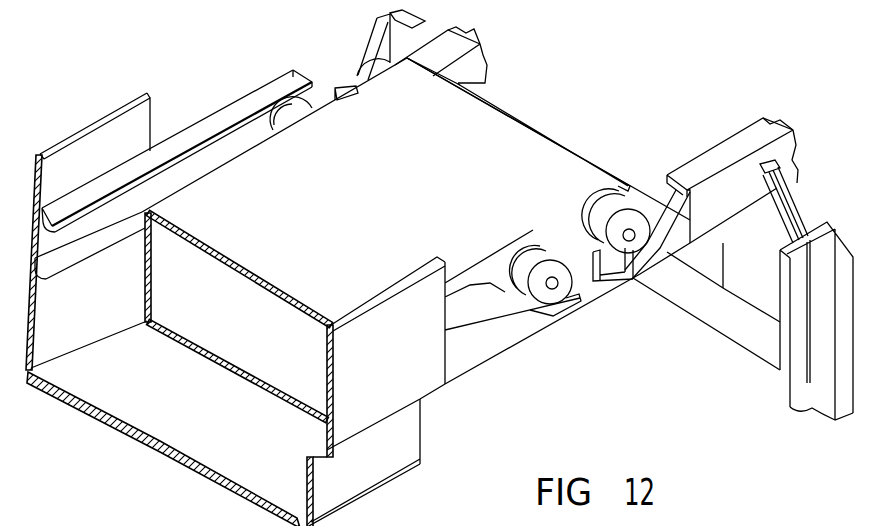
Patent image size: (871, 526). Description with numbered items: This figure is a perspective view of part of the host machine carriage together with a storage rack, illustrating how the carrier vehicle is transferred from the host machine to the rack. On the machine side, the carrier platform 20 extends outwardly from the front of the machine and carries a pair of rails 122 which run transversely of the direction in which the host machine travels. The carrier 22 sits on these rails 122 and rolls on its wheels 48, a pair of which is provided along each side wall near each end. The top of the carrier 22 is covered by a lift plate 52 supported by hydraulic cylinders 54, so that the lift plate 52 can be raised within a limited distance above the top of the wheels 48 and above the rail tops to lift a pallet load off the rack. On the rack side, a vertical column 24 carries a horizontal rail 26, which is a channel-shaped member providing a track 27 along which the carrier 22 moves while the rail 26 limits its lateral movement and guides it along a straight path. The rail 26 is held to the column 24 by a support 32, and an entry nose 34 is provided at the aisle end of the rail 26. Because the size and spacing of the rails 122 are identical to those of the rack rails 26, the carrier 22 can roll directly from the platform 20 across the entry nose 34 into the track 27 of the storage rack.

The carrier platform 20 is at (138, 417).
The carrier 22 is at (493, 130).
The vertical column 24 is at (802, 403).
The horizontal rail 26 is at (437, 26).
The track 27 is at (478, 58).
The support 32 is at (803, 199).
The entry nose 34 is at (667, 253).
The wheel 48 is at (567, 282).
The lift plate 52 is at (383, 190).
The hydraulic cylinder 54 is at (223, 449).
The rail 122 is at (252, 96).